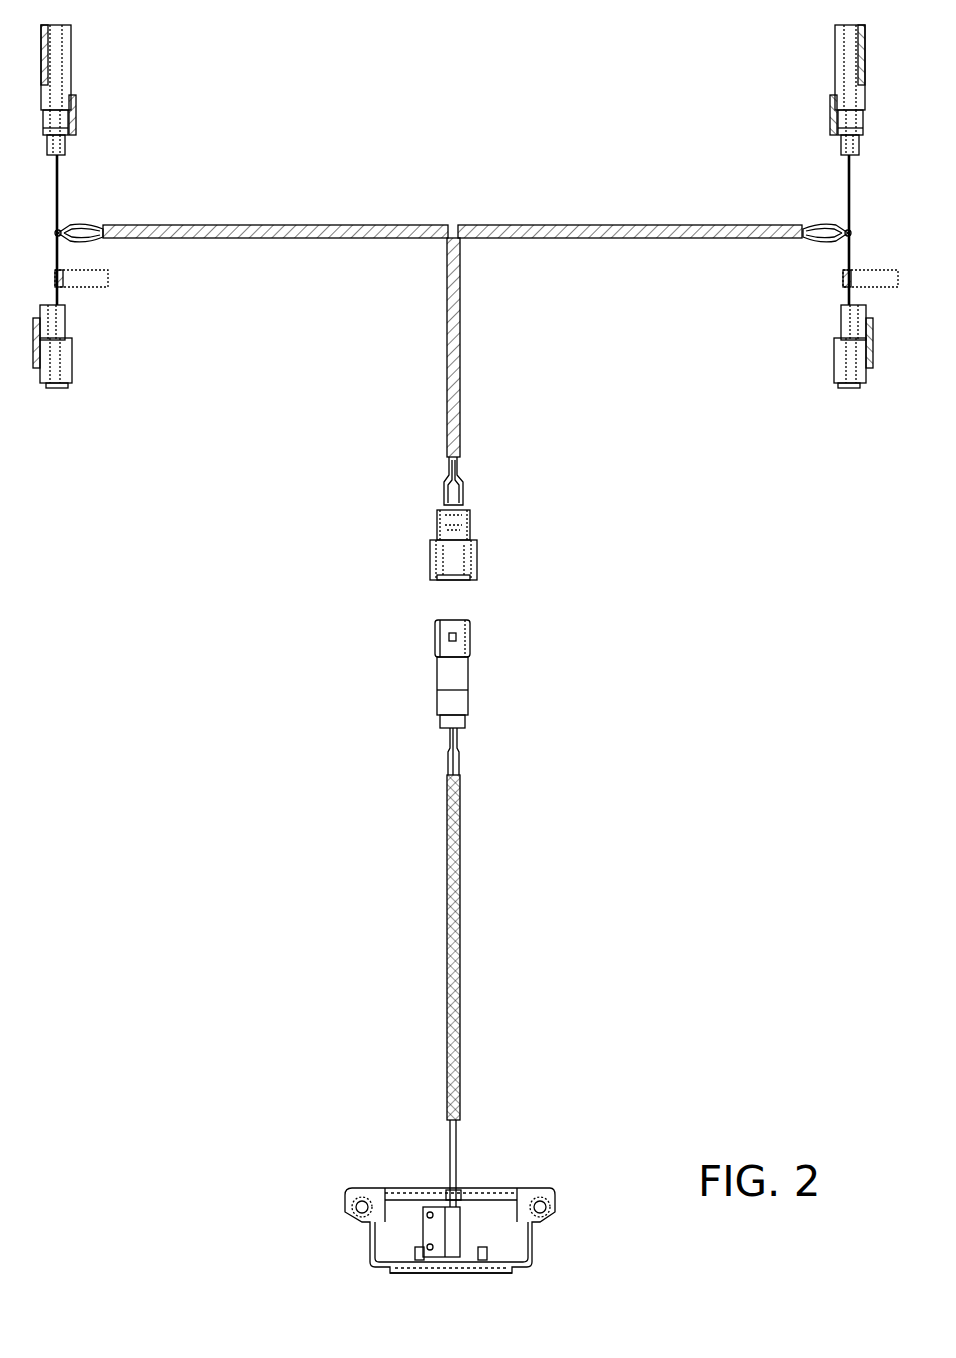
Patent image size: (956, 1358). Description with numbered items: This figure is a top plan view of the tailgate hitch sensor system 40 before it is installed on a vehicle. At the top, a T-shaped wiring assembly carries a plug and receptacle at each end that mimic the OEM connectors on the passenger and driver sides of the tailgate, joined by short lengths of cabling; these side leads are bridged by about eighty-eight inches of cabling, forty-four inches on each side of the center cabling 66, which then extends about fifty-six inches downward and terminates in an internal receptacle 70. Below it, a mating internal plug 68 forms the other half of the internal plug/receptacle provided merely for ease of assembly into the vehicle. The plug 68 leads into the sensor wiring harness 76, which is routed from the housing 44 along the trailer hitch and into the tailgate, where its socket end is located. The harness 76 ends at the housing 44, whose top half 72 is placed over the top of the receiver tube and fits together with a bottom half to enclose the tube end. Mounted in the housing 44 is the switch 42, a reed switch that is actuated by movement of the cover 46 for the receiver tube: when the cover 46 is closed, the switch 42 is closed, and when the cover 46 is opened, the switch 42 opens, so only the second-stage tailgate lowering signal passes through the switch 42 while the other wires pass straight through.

The tailgate hitch sensor system 40 is at (452, 242).
The switch 42 is at (457, 1228).
The housing 44 is at (398, 1205).
The cover 46 is at (408, 1270).
The center cabling 66 is at (455, 353).
The internal plug 68 is at (460, 676).
The internal receptacle 70 is at (462, 527).
The top half 72 is at (513, 1253).
The sensor wiring harness 76 is at (452, 960).